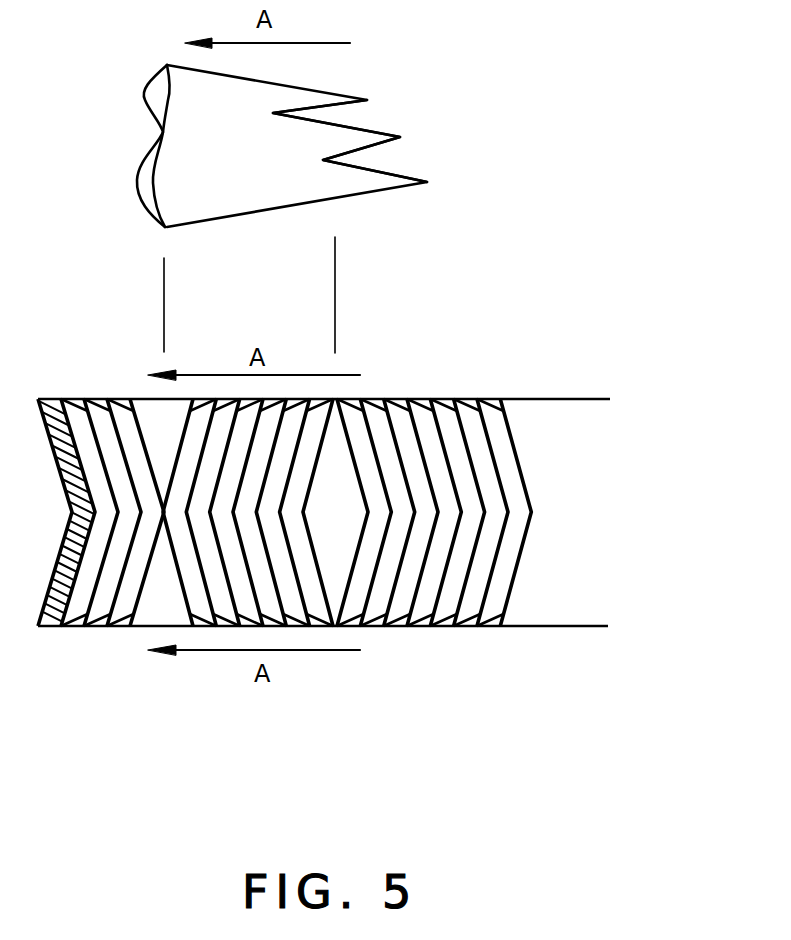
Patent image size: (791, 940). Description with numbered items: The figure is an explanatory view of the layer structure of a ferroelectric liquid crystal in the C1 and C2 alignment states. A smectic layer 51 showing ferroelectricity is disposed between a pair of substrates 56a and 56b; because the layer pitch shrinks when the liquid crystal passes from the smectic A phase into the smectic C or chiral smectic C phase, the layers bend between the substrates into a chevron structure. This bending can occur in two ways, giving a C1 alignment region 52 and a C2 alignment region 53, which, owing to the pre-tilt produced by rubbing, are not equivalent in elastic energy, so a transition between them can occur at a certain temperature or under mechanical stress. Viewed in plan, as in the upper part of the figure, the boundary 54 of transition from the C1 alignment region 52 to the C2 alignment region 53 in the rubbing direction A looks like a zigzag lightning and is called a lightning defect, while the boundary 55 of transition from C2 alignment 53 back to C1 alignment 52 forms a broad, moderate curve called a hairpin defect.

The smectic layer 51 is at (510, 480).
The C1 alignment region 52 is at (152, 693).
The C2 alignment region 53 is at (332, 693).
The boundary of transition from C1 alignment to C2 alignment 54 is at (325, 92).
The boundary of transition from C2 alignment to C1 alignment 55 is at (140, 102).
The substrate 56a is at (545, 400).
The substrate 56b is at (545, 628).